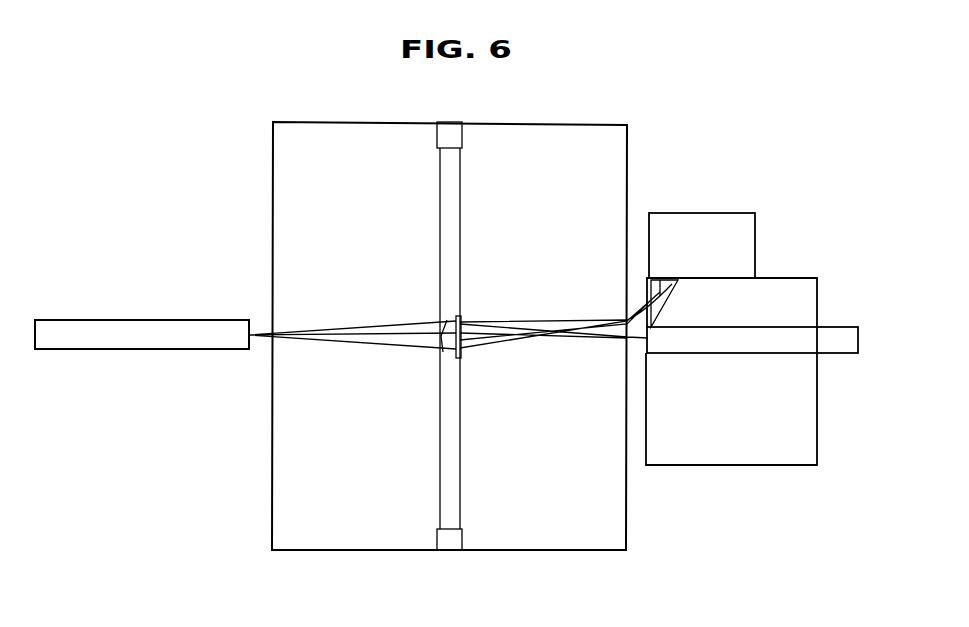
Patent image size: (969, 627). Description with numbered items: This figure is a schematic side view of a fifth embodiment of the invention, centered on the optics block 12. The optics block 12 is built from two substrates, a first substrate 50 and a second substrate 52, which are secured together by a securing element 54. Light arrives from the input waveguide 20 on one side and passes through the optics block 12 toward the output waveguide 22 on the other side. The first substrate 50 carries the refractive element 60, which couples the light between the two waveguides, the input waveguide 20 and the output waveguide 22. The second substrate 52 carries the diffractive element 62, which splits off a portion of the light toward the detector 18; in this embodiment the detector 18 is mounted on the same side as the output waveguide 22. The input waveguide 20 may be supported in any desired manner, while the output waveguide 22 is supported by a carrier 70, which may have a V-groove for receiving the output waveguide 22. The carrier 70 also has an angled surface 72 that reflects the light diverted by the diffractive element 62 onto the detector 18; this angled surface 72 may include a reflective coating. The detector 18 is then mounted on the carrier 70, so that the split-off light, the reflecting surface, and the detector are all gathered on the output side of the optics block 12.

The optics block 12 is at (343, 104).
The detector 18 is at (745, 208).
The input waveguide 20 is at (116, 310).
The output waveguide 22 is at (848, 327).
The first substrate 50 is at (415, 520).
The second substrate 52 is at (482, 528).
The securing element 54 is at (453, 122).
The refractive element 60 is at (447, 320).
The diffractive element 62 is at (456, 350).
The carrier 70 is at (745, 478).
The angled surface 72 is at (651, 300).